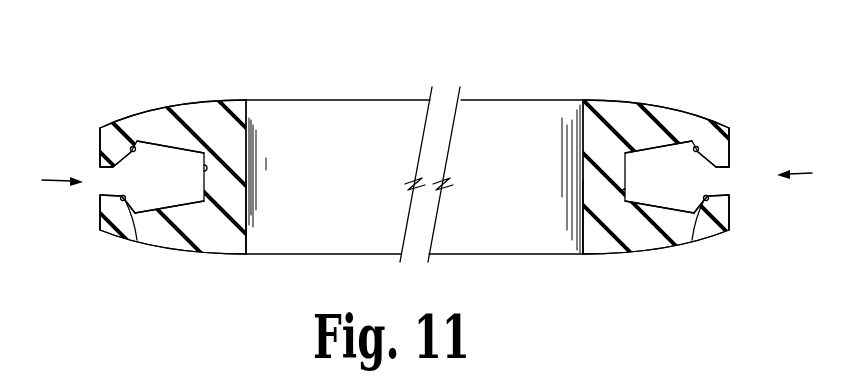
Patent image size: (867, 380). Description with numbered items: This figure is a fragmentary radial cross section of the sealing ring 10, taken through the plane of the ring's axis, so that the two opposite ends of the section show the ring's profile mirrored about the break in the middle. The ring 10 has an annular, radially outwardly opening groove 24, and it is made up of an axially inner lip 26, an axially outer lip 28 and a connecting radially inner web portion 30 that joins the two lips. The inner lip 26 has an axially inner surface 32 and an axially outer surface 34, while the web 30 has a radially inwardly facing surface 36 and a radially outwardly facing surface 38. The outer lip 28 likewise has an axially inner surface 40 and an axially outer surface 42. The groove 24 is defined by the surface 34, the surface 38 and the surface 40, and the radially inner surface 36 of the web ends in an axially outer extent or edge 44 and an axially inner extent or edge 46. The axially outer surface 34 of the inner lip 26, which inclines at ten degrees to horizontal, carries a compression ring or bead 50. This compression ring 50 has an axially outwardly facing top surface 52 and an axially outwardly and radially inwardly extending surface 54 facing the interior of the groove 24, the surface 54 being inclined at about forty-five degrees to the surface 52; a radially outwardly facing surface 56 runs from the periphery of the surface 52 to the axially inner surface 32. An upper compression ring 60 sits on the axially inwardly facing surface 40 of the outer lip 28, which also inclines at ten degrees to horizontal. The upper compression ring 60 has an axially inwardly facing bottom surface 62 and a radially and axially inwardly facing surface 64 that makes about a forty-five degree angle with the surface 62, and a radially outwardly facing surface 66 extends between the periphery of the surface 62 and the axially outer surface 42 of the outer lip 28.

The ring 10 is at (388, 92).
The groove 24 is at (429, 176).
The axially inner lip 26 is at (210, 243).
The axially outer lip 28 is at (213, 107).
The connecting radially inner web portion 30 is at (232, 197).
The axially inner surface 32 is at (176, 255).
The axially outer surface 34 is at (152, 210).
The radially inwardly facing surface 36 is at (252, 133).
The radially outwardly facing surface 38 is at (207, 169).
The axially inner surface 40 is at (172, 147).
The axially outer surface 42 is at (164, 102).
The axially outer extent 44 is at (247, 101).
The axially inner extent 46 is at (248, 255).
The compression ring 50 is at (147, 242).
The top surface 52 is at (100, 195).
The axially outwardly and radially inwardly extending surface 54 is at (137, 240).
The radially outwardly facing surface 56 is at (100, 216).
The upper compression ring 60 is at (112, 134).
The bottom surface 62 is at (110, 166).
The radially and axially inwardly facing surface 64 is at (129, 147).
The radially outwardly facing surface 66 is at (100, 146).